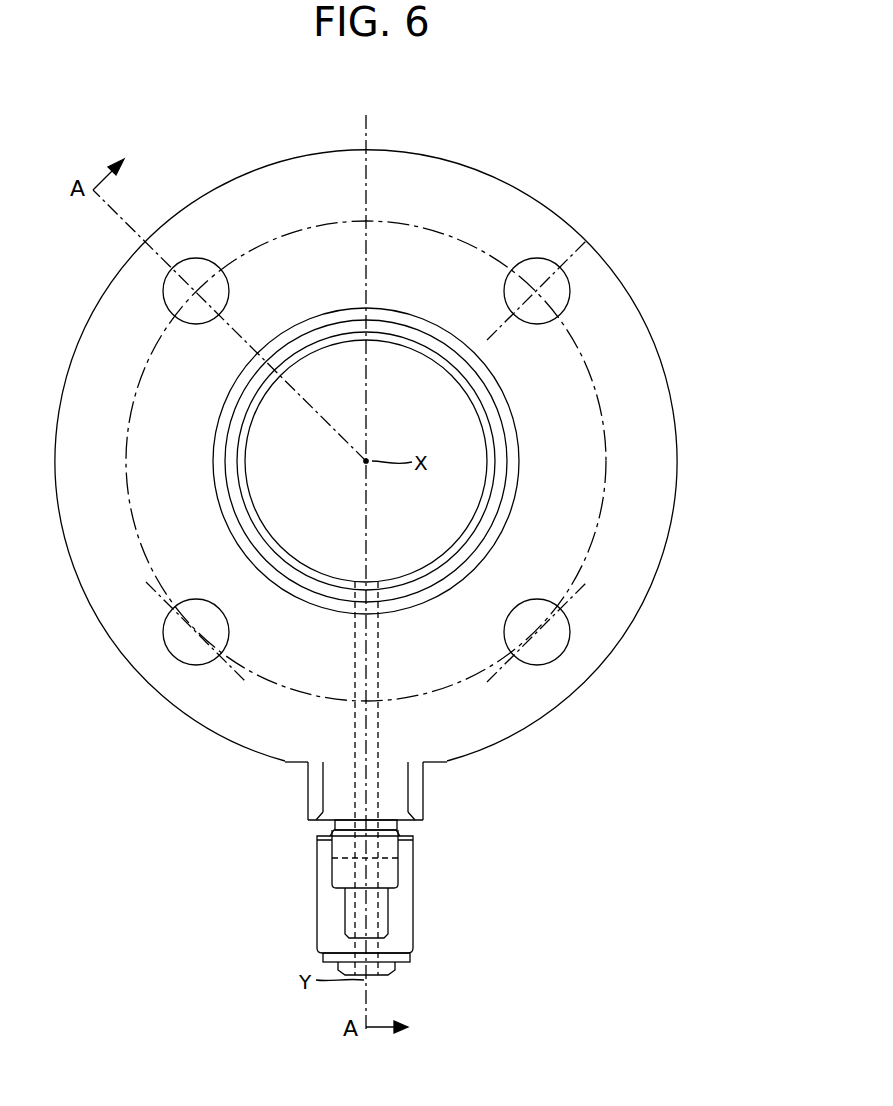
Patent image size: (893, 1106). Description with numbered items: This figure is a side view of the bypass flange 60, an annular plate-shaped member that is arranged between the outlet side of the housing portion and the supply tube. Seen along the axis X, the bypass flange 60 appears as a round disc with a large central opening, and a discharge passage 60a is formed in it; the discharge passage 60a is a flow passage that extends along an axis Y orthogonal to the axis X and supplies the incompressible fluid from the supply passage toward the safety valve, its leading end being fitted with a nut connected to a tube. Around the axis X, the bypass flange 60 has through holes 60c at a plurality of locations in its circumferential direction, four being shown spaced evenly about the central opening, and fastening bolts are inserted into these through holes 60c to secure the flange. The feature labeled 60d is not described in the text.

The bypass flange 60 is at (710, 328).
The discharge passage 60a is at (375, 638).
The through holes 60c is at (173, 282).
The central opening / seat 60d is at (247, 471).